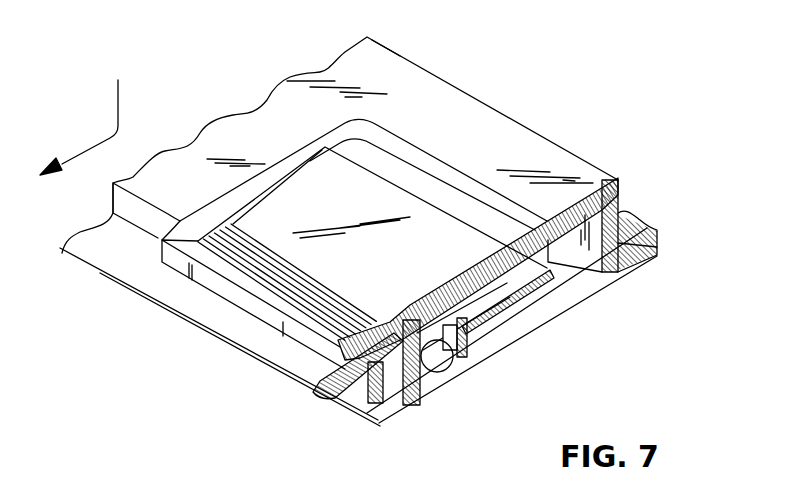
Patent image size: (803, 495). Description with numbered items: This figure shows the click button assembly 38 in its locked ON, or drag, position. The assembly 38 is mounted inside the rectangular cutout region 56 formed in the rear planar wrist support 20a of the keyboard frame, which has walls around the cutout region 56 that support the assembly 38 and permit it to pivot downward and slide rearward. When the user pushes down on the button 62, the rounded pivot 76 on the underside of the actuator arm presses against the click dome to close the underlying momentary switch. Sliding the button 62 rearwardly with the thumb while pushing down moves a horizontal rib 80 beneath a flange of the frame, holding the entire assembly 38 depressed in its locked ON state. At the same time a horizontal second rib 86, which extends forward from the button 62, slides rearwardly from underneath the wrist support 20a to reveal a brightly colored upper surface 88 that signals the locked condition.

The wrist support 20a is at (254, 122).
The cutout region 56 is at (400, 103).
The button 62 is at (209, 230).
The upper surface 88 is at (463, 202).
The click button assembly 38 is at (226, 298).
The rounded pivot 76 is at (481, 337).
The horizontal rib 80 is at (410, 405).
The horizontal second rib 86 is at (542, 292).